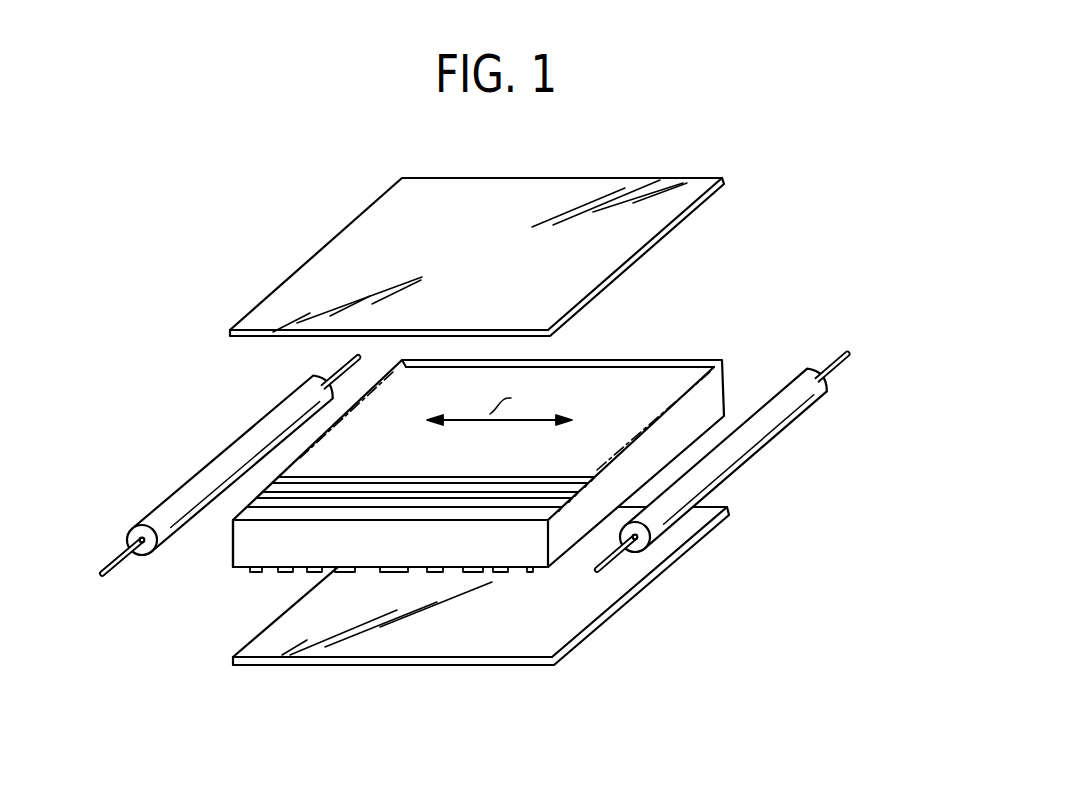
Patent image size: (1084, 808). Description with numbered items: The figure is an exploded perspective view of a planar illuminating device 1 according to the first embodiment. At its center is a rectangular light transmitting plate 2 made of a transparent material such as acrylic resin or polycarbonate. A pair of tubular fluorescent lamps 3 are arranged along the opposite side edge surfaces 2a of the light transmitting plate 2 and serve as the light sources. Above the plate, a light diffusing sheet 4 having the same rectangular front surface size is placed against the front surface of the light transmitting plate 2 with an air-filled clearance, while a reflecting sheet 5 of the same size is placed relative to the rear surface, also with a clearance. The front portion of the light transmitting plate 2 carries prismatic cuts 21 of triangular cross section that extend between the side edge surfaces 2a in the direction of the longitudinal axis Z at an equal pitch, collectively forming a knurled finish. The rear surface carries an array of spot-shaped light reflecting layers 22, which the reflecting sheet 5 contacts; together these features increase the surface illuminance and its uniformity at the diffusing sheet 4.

The planar illuminating device 1 is at (790, 268).
The light transmitting plate 2 is at (704, 412).
The side edge surface 2a is at (223, 546).
The prismatic cuts 21 is at (652, 362).
The spot-shaped light reflecting layers 22 is at (287, 572).
The tubular fluorescent lamp 3 is at (230, 462).
The light diffusing sheet 4 is at (598, 234).
The reflecting sheet 5 is at (580, 605).